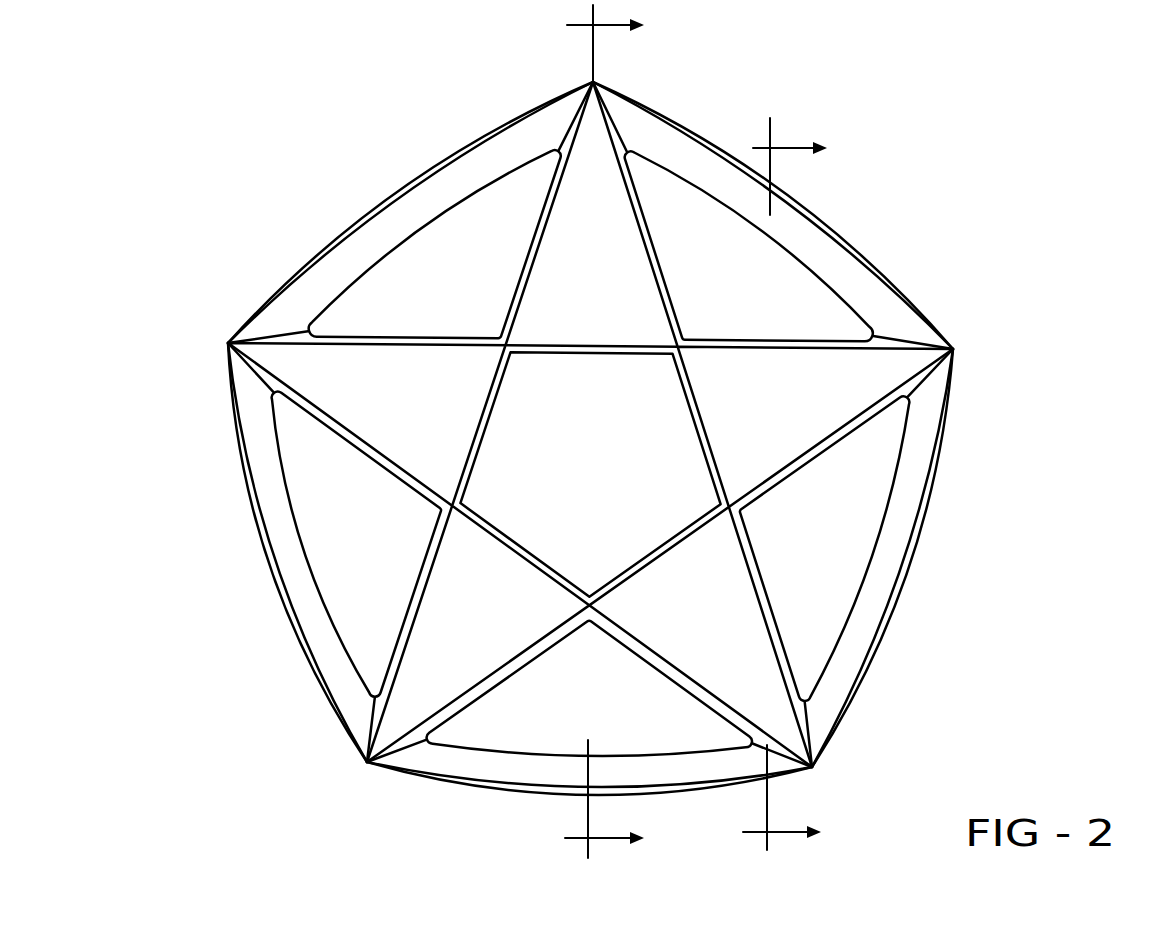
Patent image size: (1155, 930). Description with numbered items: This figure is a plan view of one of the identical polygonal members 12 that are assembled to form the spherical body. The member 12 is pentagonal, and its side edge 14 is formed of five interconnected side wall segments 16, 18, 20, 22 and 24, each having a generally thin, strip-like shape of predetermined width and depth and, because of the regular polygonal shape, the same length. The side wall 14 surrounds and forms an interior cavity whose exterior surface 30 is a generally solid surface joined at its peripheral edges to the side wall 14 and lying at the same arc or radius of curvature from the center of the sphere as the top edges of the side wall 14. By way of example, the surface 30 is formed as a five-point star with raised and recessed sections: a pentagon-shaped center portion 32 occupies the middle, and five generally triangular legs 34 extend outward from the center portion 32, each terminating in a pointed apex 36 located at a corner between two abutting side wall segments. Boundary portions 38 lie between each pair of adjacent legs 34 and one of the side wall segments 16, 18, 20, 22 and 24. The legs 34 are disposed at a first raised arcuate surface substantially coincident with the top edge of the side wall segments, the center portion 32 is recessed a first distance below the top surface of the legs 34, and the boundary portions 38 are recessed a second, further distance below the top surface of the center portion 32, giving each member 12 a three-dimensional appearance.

The polygonal member 12 is at (394, 128).
The side edge 14 is at (282, 268).
The side wall segment 16 is at (401, 206).
The side wall segment 18 is at (275, 552).
The side wall segment 20 is at (435, 767).
The side wall segment 22 is at (870, 642).
The side wall segment 24 is at (905, 320).
The interior cavity surface 30 is at (535, 172).
The pentagon-shaped center portion 32 is at (650, 385).
The triangular leg 34 is at (608, 197).
The pointed apex 36 is at (590, 83).
The boundary portion 38 is at (362, 285).